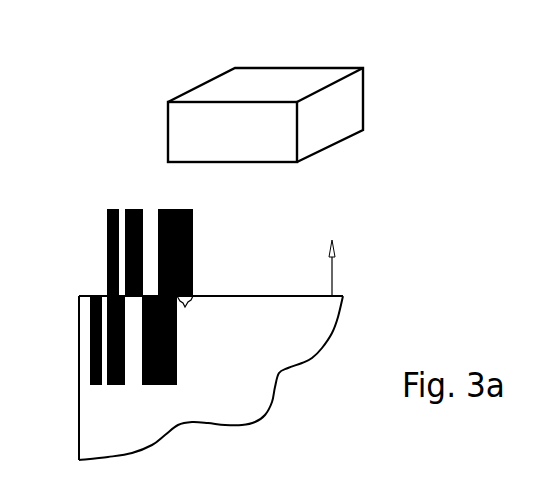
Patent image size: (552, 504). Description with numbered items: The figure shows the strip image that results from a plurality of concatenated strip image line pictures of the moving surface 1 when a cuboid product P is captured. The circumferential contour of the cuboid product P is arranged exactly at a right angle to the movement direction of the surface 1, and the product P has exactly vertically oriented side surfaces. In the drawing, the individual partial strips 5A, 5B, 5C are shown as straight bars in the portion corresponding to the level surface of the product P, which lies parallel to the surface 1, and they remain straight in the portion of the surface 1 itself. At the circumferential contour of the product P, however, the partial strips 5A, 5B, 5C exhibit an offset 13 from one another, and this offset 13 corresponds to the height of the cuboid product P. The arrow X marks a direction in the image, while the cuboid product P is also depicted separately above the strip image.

The cuboid product P is at (282, 80).
The moving surface 1 is at (184, 310).
The partial strip 5A is at (115, 199).
The partial strip 5B is at (130, 209).
The partial strip 5C is at (192, 209).
The offset 13 is at (185, 307).
The X axis direction X is at (332, 264).